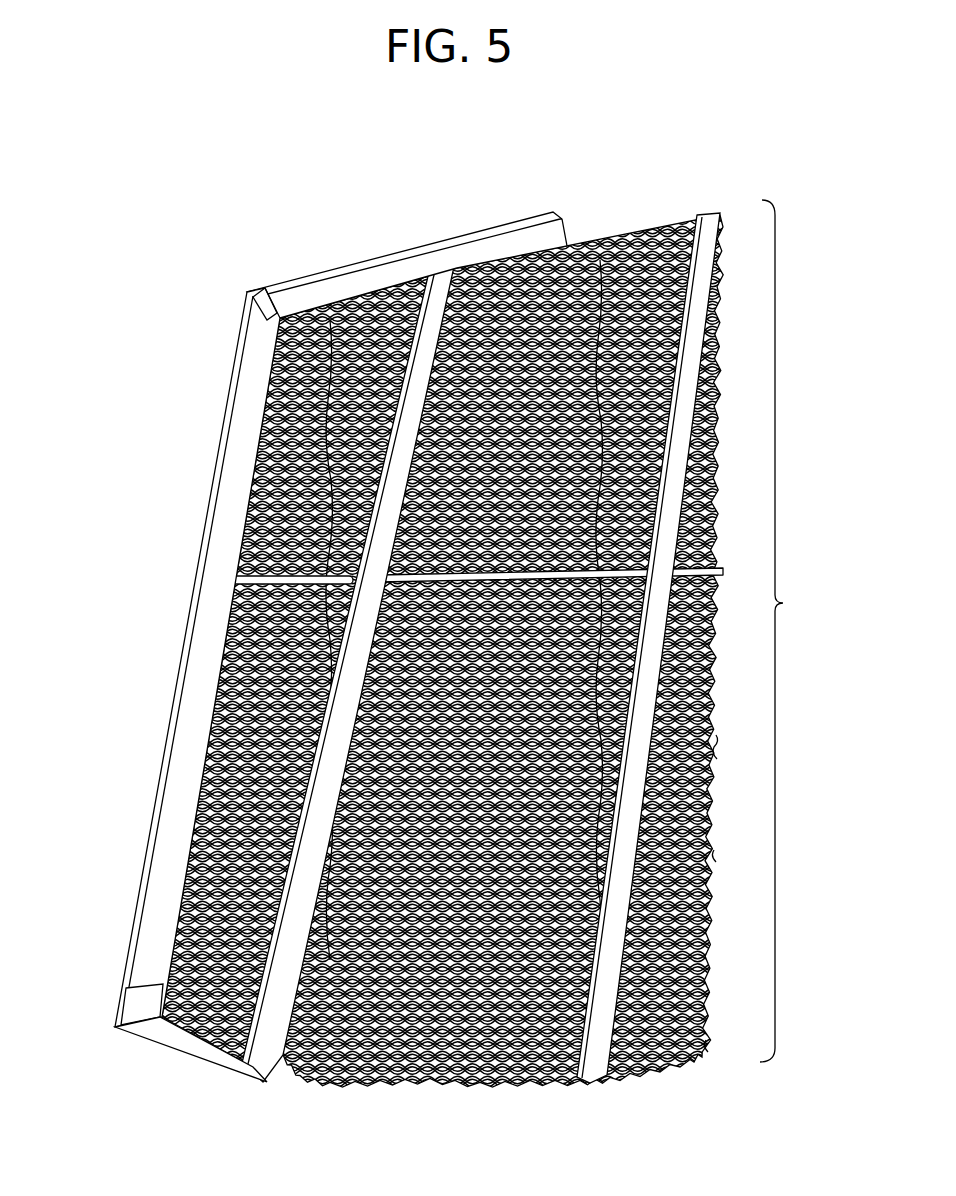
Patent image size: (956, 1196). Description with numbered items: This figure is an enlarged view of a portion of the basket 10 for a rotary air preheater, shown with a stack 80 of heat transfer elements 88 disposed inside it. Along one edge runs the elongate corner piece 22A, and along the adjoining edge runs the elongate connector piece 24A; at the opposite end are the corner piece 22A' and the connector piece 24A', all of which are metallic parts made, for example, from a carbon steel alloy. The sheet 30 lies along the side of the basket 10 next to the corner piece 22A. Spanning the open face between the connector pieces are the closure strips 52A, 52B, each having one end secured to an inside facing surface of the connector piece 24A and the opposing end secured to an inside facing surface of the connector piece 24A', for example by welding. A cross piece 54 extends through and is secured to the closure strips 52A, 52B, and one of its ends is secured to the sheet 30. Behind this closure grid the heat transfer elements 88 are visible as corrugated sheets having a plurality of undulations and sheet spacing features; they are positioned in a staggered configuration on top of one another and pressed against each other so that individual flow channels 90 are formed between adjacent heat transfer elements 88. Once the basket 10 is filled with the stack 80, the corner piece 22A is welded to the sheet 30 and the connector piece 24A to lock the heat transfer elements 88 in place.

The basket 10 is at (150, 238).
The corner piece 22A is at (197, 657).
The connector piece 24A is at (407, 262).
The corner piece 22A' is at (110, 1004).
The connector piece 24A' is at (191, 1075).
The sheet 30 is at (175, 764).
The closure strip 52A is at (266, 1084).
The closure strip 52B is at (598, 1084).
The cross piece 54 is at (228, 580).
The stack 80 is at (490, 643).
The heat transfer element 88 is at (727, 848).
The flow channel 90 is at (728, 740).